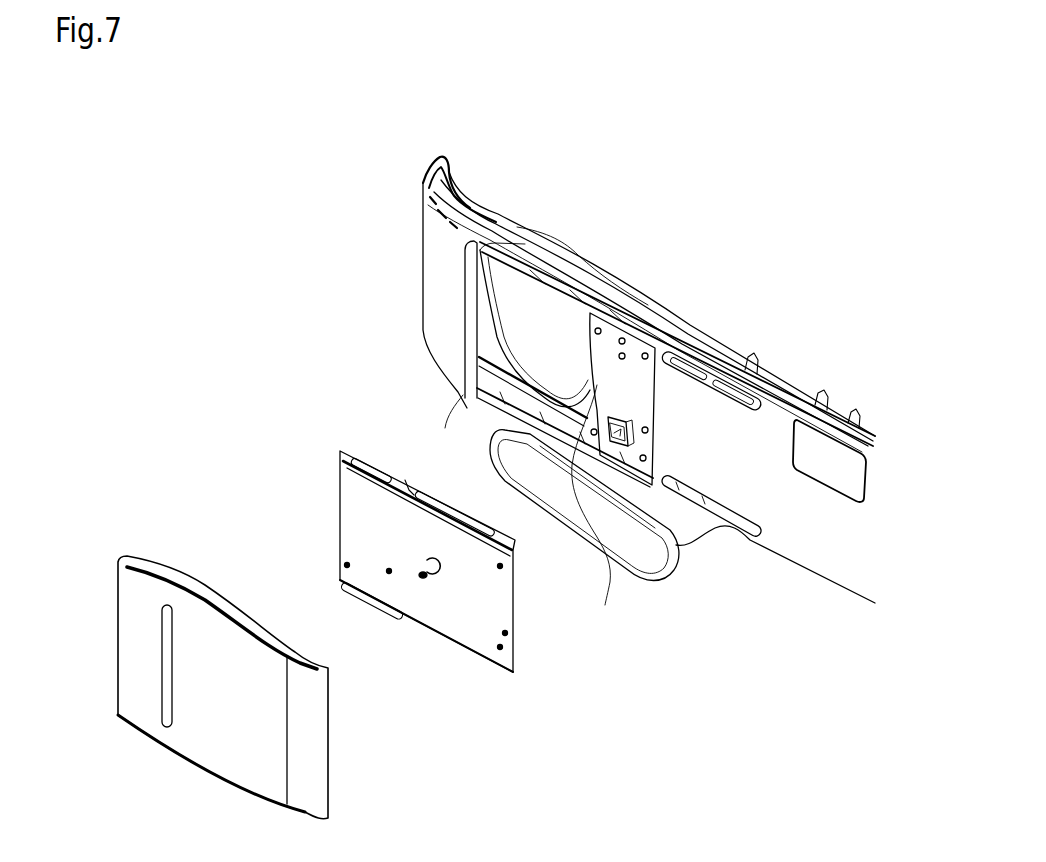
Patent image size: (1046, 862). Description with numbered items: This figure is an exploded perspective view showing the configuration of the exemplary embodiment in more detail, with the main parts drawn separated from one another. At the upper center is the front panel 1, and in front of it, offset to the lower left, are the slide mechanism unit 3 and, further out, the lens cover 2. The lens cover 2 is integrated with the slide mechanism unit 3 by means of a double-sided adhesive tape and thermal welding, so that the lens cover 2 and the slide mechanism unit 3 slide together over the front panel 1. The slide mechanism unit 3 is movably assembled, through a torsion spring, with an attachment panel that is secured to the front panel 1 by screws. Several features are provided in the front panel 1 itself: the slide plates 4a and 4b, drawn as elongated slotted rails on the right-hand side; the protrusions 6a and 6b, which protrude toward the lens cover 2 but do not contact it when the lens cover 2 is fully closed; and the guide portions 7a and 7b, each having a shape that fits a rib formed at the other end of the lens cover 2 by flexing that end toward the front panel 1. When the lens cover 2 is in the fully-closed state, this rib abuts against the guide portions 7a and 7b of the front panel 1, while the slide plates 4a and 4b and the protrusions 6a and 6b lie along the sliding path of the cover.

The front panel 1 is at (432, 283).
The lens cover 2 is at (212, 718).
The slide mechanism unit 3 is at (437, 601).
The slide plate 4a is at (740, 368).
The slide plate 4b is at (722, 532).
The protrusion 6a is at (590, 300).
The protrusion 6b is at (463, 385).
The guide portion 7a is at (496, 232).
The guide portion 7b is at (482, 398).